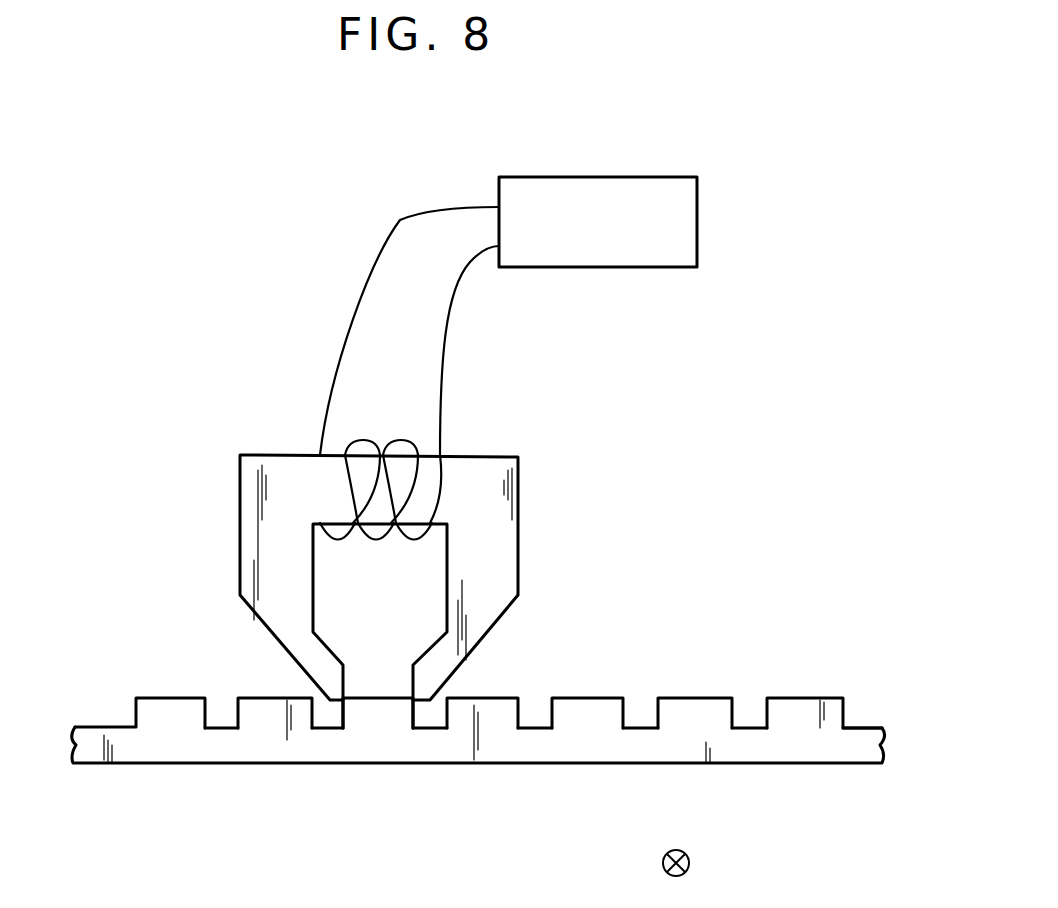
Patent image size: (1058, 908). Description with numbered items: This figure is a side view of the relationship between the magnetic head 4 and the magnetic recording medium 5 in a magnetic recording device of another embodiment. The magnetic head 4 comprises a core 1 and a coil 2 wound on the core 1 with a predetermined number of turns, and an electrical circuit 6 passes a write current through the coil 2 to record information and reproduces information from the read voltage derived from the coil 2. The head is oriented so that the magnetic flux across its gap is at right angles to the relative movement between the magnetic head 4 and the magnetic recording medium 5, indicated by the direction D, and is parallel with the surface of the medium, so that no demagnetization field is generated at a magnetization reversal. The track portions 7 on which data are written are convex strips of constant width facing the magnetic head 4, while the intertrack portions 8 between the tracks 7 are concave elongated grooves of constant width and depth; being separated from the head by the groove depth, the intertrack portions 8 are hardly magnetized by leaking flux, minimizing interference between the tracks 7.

The core 1 is at (513, 565).
The coil 2 is at (443, 480).
The magnetic head 4 is at (238, 477).
The magnetic recording medium 5 is at (840, 750).
The electrical circuit 6 is at (619, 267).
The track portions 7 is at (168, 708).
The intertrack portions 8 is at (222, 725).
The direction of movement D is at (698, 872).